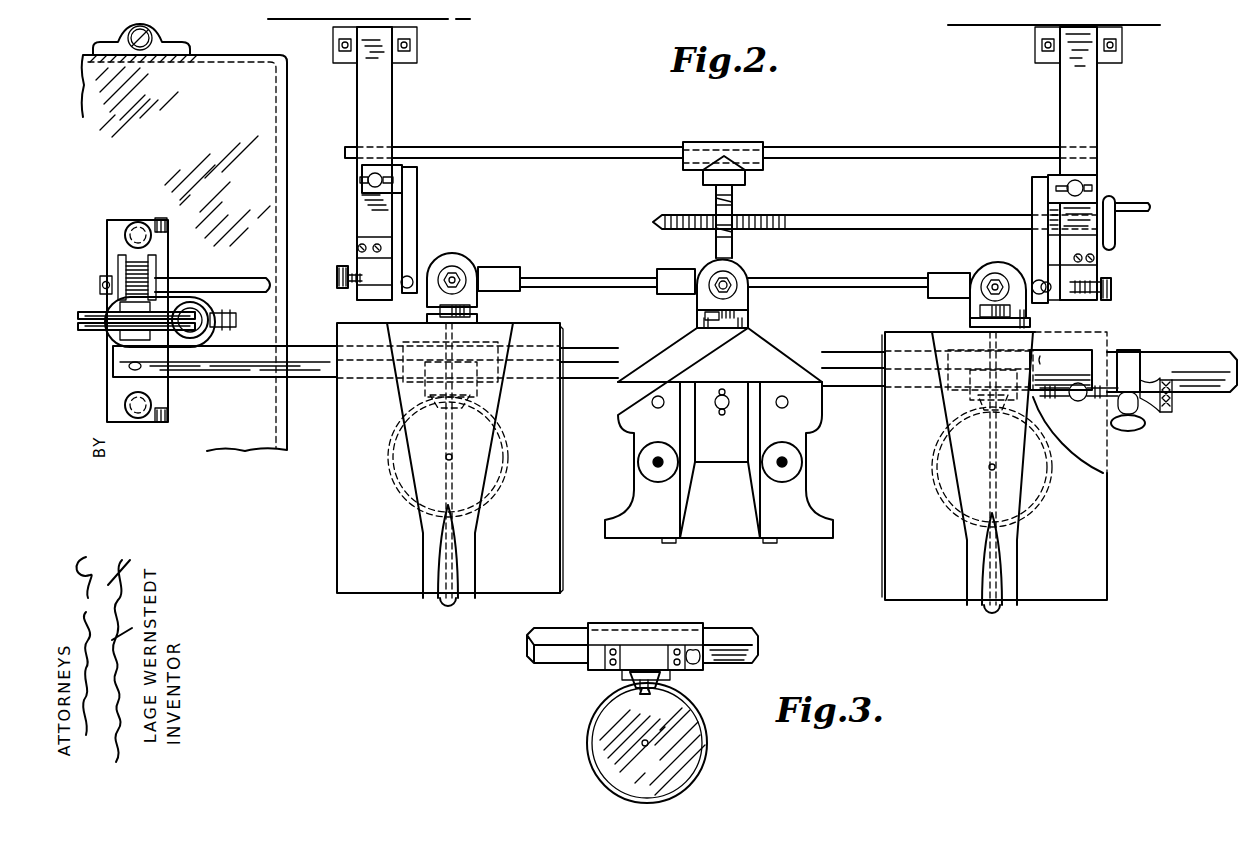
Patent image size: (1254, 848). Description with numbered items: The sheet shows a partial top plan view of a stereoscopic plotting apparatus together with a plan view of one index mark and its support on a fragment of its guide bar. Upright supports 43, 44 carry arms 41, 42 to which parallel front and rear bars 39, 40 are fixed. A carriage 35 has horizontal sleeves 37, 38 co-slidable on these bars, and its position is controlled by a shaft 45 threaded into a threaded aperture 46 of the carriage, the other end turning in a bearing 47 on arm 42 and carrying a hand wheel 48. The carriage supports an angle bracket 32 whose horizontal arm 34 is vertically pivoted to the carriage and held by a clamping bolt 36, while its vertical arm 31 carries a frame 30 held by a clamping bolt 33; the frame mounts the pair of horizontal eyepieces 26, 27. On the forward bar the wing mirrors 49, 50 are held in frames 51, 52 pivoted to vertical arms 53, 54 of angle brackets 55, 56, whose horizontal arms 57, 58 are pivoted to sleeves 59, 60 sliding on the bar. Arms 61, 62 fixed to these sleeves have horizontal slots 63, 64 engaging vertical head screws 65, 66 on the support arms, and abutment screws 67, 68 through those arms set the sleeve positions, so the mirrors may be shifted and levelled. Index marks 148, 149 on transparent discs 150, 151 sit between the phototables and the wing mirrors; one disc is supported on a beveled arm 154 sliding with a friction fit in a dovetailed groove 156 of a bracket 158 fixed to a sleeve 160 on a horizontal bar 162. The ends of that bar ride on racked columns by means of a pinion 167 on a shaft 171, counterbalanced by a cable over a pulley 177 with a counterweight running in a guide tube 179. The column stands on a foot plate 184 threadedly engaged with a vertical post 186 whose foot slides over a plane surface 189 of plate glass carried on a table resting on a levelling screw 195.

In FIG. 2, the levelling screw 195 is at (150, 42).
In FIG. 2, the plane surface 189 is at (184, 253).
In FIG. 2, the vertical post 186 is at (138, 222).
In FIG. 2, the pinion 167 is at (130, 265).
In FIG. 2, the shaft 171 is at (222, 283).
In FIG. 2, the vertical guide tube 179 is at (210, 310).
In FIG. 2, the pulley 177 is at (104, 330).
In FIG. 2, the foot plate 184 is at (110, 382).
In FIG. 2, the horizontal bar 162 is at (308, 372).
In FIG. 3, the horizontal bar 162 is at (730, 636).
In FIG. 2, the upright support 43 is at (362, 60).
In FIG. 2, the upright support 44 is at (1090, 85).
In FIG. 2, the vertical head screw 65 is at (365, 177).
In FIG. 2, the horizontal slot 63 is at (383, 173).
In FIG. 2, the arm 41 is at (357, 208).
In FIG. 2, the arm 61 is at (417, 210).
In FIG. 2, the abutment screw 67 is at (336, 276).
In FIG. 2, the horizontal arm 57 is at (455, 262).
In FIG. 2, the angle bracket 55 is at (437, 309).
In FIG. 2, the vertical arm 53 is at (478, 318).
In FIG. 2, the rear bar 40 is at (590, 150).
In FIG. 2, the horizontal sleeve 38 is at (738, 142).
In FIG. 2, the threaded aperture 46 is at (733, 210).
In FIG. 2, the shaft 45 is at (872, 219).
In FIG. 2, the front bar 39 is at (582, 280).
In FIG. 2, the sleeve 59 is at (507, 268).
In FIG. 2, the horizontal sleeve 37 is at (668, 270).
In FIG. 2, the sleeve 60 is at (938, 274).
In FIG. 2, the horizontal arm 34 is at (748, 272).
In FIG. 2, the carriage 35 is at (705, 270).
In FIG. 2, the clamping bolt 36 is at (732, 292).
In FIG. 2, the angle bracket 32 is at (700, 313).
In FIG. 2, the clamping bolt 33 is at (730, 315).
In FIG. 2, the vertical arm 31 is at (708, 323).
In FIG. 2, the frame 30 is at (768, 358).
In FIG. 2, the horizontal eyepiece 26 is at (658, 468).
In FIG. 2, the horizontal eyepiece 27 is at (782, 468).
In FIG. 2, the wing mirror 49 is at (375, 582).
In FIG. 2, the wing mirror 50 is at (1082, 590).
In FIG. 2, the frame 51 is at (470, 525).
In FIG. 2, the frame 52 is at (1018, 533).
In FIG. 2, the index mark 148 is at (452, 457).
In FIG. 3, the index mark 148 is at (648, 743).
In FIG. 2, the index mark 149 is at (996, 467).
In FIG. 2, the transparent disc 150 is at (503, 470).
In FIG. 3, the transparent disc 150 is at (688, 762).
In FIG. 2, the transparent disc 151 is at (1043, 480).
In FIG. 3, the transparent disc 151 is at (588, 744).
In FIG. 2, the horizontal arm 58 is at (978, 264).
In FIG. 2, the angle bracket 56 is at (978, 312).
In FIG. 2, the vertical arm 54 is at (1022, 325).
In FIG. 2, the bearing 47 is at (1053, 232).
In FIG. 2, the arm 62 is at (1035, 192).
In FIG. 2, the horizontal slot 64 is at (1062, 183).
In FIG. 2, the vertical head screw 66 is at (1080, 182).
In FIG. 2, the hand wheel 48 is at (1113, 198).
In FIG. 2, the arm 42 is at (1092, 237).
In FIG. 2, the abutment screw 68 is at (1113, 290).
In FIG. 3, the sleeve 160 is at (605, 636).
In FIG. 3, the dovetailed groove 156 is at (650, 680).
In FIG. 3, the bracket 158 is at (622, 678).
In FIG. 3, the beveled arm 154 is at (662, 684).